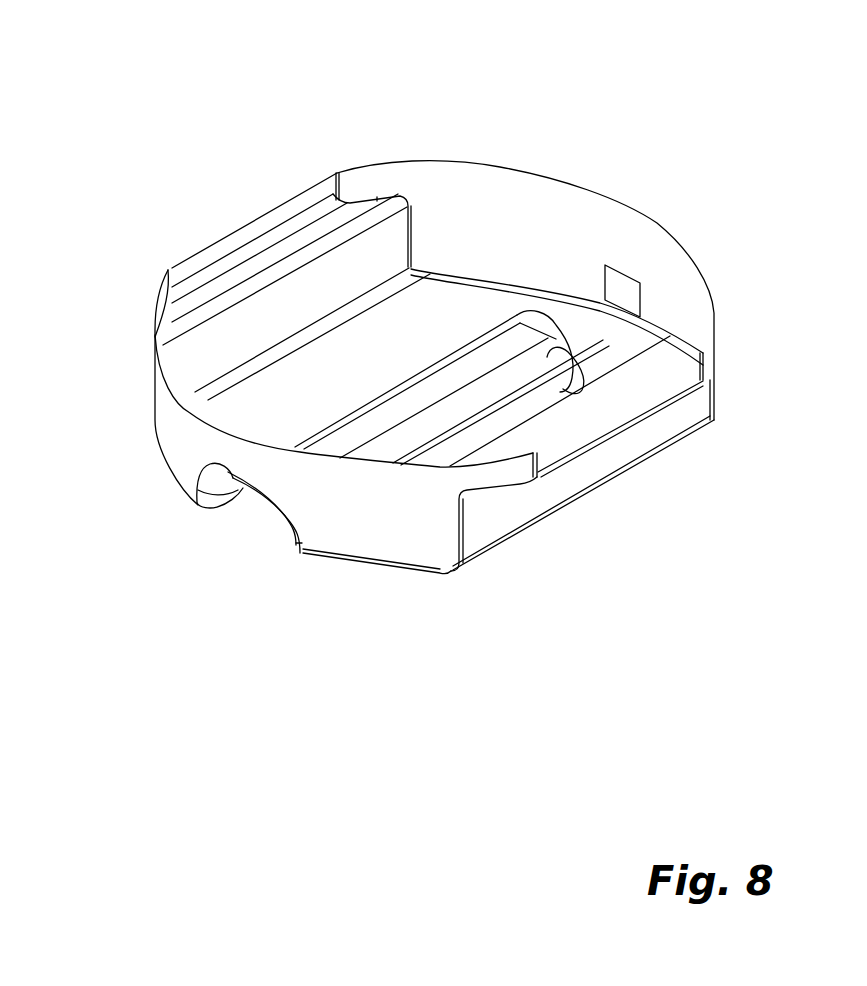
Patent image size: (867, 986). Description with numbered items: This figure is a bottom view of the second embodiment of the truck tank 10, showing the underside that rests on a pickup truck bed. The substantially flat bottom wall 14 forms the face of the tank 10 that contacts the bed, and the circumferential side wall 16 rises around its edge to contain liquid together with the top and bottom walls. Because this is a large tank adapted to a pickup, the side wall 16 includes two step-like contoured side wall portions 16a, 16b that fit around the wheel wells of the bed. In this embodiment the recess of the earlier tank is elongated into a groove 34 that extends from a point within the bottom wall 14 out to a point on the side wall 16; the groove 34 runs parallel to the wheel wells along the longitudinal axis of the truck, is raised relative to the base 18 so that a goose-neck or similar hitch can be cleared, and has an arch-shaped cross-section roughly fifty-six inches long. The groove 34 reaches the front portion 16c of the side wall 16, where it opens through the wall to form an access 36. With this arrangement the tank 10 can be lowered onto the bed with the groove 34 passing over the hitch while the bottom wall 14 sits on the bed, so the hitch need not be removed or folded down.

The truck tank 10 is at (441, 344).
The bottom wall 14 is at (430, 577).
The side wall 16 is at (516, 226).
The side wall portion 16a is at (600, 470).
The side wall portion 16b is at (208, 247).
The front portion of the side wall 16c is at (324, 455).
The base 18 is at (388, 357).
The groove 34 is at (550, 357).
The access 36 is at (208, 510).